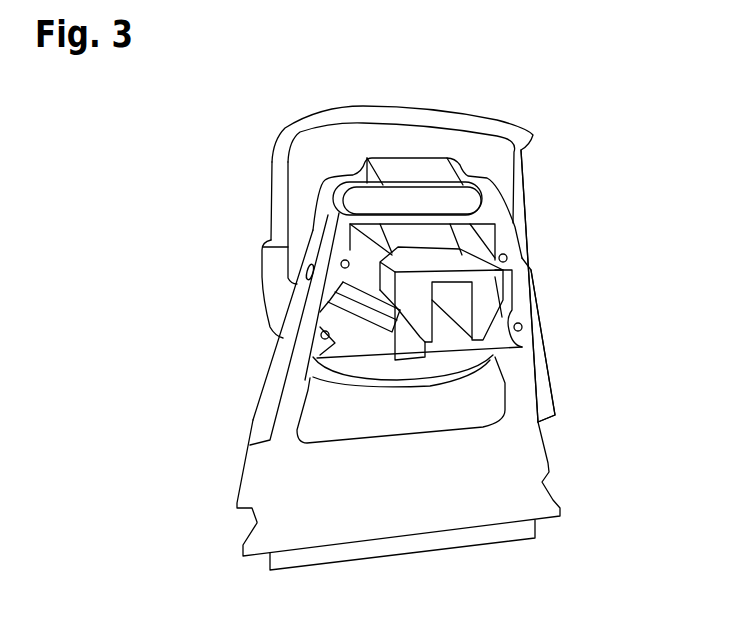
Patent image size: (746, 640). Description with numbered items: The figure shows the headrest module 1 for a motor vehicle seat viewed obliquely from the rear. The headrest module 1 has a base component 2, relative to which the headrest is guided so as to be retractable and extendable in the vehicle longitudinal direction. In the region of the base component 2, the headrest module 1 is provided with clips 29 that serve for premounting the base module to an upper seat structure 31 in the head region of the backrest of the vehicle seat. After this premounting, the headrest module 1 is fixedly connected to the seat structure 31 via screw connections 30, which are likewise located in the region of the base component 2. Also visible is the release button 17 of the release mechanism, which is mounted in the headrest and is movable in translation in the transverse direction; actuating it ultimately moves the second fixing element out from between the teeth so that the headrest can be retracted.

The headrest module 1 is at (565, 93).
The base component 2 is at (347, 368).
The release button 17 is at (280, 301).
The clips 29 is at (304, 272).
The screw connections 30 is at (342, 261).
The upper seat structure 31 is at (542, 398).